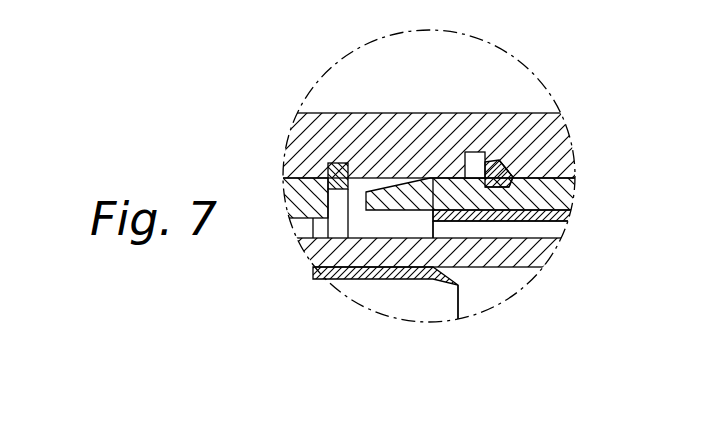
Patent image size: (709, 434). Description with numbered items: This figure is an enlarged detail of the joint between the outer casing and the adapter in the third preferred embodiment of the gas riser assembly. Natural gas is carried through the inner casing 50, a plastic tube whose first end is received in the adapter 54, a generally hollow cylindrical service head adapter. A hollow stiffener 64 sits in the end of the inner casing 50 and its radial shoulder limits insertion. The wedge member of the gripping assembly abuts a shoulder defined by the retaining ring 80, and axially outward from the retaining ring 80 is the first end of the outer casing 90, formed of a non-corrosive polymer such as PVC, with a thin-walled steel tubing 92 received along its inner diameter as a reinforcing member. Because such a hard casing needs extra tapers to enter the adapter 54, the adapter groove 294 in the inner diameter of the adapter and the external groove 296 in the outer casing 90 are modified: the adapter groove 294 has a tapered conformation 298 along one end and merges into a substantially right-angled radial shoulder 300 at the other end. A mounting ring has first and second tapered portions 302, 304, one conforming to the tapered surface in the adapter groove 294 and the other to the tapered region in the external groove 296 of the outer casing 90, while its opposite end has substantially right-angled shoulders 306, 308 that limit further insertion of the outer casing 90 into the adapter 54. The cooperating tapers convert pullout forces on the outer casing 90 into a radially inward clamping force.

The inner casing 50 is at (548, 250).
The adapter 54 is at (347, 133).
The hollow stiffener 64 is at (356, 282).
The retaining ring 80 is at (328, 168).
The outer casing 90 is at (537, 195).
The thin-walled steel tubing 92 is at (550, 222).
The adapter groove 294 is at (500, 162).
The external groove of the outer casing 296 is at (560, 214).
The tapered conformation 298 is at (513, 180).
The radial shoulder 300 is at (468, 190).
The first tapered portion 302 is at (505, 162).
The second tapered portion 304 is at (508, 187).
The right-angled shoulder 306 is at (432, 120).
The right-angled shoulder 308 is at (468, 195).